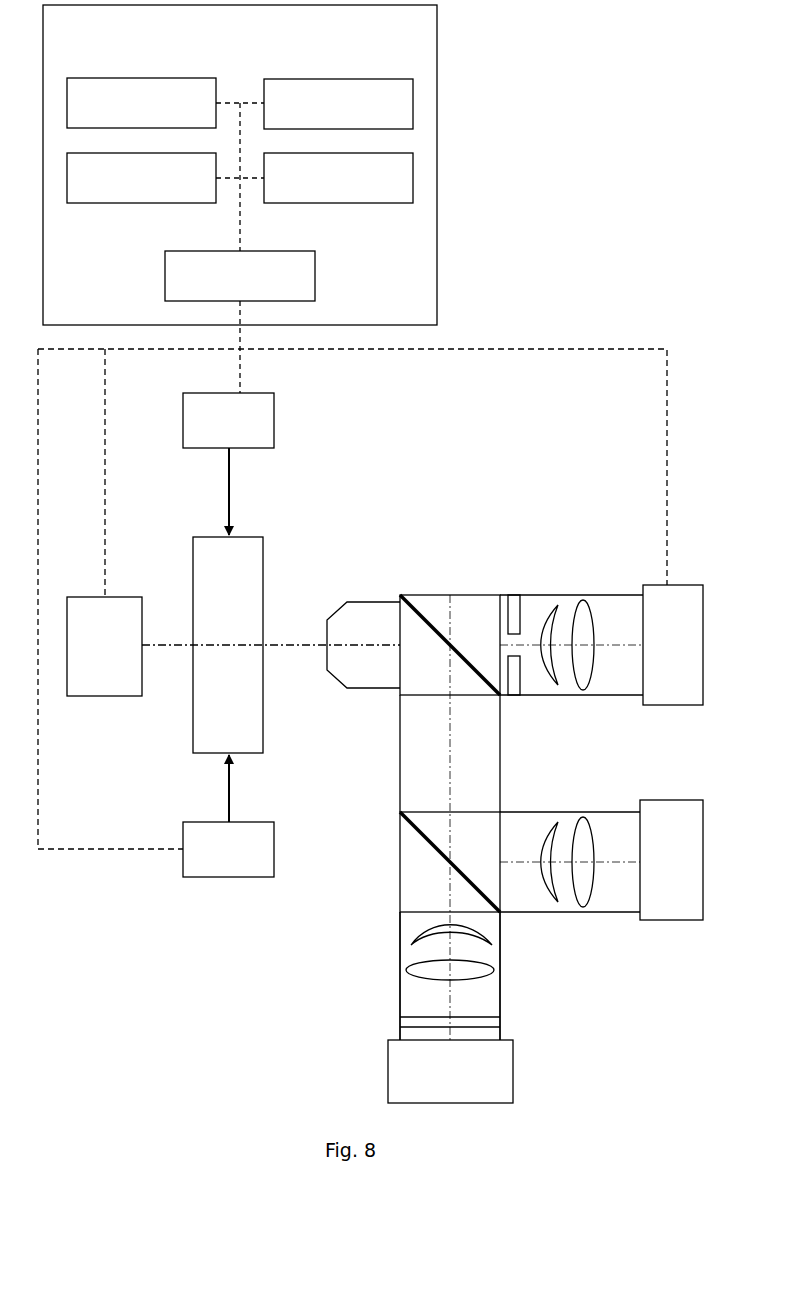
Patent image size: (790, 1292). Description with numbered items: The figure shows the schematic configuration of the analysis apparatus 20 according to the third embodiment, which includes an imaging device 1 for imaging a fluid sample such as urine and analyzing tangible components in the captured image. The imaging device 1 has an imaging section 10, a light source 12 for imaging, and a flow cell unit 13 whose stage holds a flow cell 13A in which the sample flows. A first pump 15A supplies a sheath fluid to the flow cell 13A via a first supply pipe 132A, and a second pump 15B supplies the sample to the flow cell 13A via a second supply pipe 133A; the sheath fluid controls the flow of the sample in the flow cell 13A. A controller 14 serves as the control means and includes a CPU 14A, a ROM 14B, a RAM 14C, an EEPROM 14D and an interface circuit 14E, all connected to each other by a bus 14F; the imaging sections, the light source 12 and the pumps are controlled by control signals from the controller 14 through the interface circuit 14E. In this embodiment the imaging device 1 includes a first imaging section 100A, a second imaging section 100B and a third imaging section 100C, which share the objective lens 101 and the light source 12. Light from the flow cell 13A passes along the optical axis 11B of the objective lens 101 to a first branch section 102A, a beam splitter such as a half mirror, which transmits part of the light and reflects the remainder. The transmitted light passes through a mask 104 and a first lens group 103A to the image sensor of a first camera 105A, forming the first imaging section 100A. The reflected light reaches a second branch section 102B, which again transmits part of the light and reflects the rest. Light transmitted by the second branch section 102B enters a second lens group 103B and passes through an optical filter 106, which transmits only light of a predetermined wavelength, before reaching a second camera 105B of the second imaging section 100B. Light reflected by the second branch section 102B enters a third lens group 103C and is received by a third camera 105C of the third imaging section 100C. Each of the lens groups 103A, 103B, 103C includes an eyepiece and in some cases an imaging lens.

The imaging device 1 is at (421, 455).
The imaging section 10 is at (417, 526).
The optical axis 11B is at (302, 650).
The light source 12 is at (100, 696).
The flow cell unit 13 is at (190, 768).
The flow cell 13A is at (263, 728).
The first supply pipe 132A is at (231, 790).
The second supply pipe 133A is at (231, 478).
The controller 14 is at (437, 45).
The CPU 14A is at (142, 78).
The ROM 14B is at (340, 79).
The RAM 14C is at (340, 203).
The EEPROM 14D is at (142, 203).
The interface circuit 14E is at (315, 290).
The bus 14F is at (222, 100).
The first pump 15A is at (224, 877).
The second pump 15B is at (200, 448).
The analysis apparatus 20 is at (554, 278).
The first imaging section 100A is at (572, 520).
The second imaging section 100B is at (338, 1032).
The third imaging section 100C is at (620, 968).
The objective lens 101 is at (368, 600).
The first branch section 102A is at (450, 598).
The second branch section 102B is at (430, 845).
The first lens group 103A is at (556, 688).
The second lens group 103B is at (495, 952).
The third lens group 103C is at (556, 905).
The mask 104 is at (518, 596).
The first camera 105A is at (668, 705).
The second camera 105B is at (500, 1078).
The third camera 105C is at (670, 920).
The optical filter 106 is at (490, 1014).